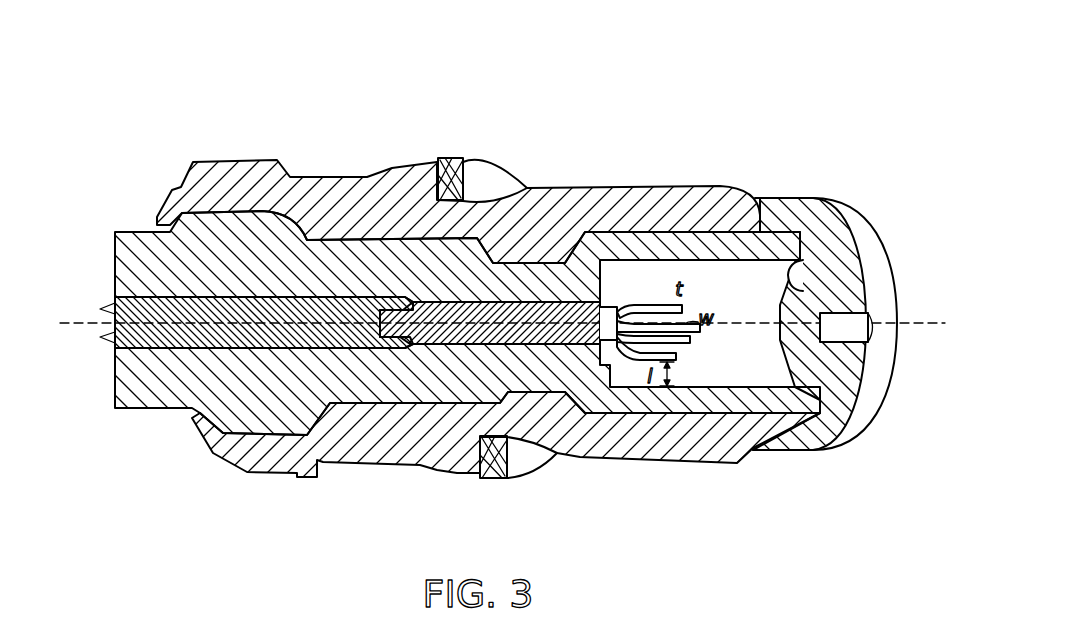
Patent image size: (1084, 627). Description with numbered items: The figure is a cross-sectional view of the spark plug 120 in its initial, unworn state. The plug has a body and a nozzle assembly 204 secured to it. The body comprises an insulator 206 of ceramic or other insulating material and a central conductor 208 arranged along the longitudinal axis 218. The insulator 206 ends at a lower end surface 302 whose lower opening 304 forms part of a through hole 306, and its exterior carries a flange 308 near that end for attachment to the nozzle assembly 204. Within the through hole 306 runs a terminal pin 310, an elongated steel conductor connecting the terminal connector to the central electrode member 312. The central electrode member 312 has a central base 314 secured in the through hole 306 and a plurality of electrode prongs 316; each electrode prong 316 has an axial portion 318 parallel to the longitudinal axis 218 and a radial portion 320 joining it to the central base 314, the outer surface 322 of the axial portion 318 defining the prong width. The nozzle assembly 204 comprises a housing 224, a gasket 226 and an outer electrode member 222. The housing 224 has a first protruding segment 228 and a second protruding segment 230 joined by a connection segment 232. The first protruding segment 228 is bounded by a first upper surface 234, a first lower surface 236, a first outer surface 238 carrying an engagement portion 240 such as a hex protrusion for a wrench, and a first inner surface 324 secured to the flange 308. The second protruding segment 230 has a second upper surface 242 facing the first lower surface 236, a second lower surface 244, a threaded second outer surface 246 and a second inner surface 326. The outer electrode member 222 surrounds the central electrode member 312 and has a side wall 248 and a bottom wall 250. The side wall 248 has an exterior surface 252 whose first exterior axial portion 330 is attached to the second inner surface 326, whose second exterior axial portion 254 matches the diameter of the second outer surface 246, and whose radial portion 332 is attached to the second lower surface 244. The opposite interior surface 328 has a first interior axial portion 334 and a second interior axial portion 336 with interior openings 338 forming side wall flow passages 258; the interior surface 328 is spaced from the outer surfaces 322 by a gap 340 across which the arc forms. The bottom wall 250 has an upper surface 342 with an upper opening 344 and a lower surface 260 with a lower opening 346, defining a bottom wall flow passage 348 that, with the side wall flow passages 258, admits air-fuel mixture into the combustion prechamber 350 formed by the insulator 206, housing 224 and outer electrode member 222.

The spark plug 120 is at (172, 34).
The nozzle assembly 204 is at (589, 100).
The insulator 206 is at (130, 230).
The central conductor 208 is at (128, 284).
The longitudinal axis 218 is at (72, 323).
The outer electrode member 222 is at (875, 268).
The housing 224 is at (333, 208).
The gasket 226 is at (456, 163).
The first protruding segment 228 is at (343, 175).
The second protruding segment 230 is at (704, 184).
The connection segment 232 is at (497, 185).
The first upper surface 234 is at (163, 197).
The first lower surface 236 is at (483, 481).
The first outer surface 238 is at (399, 163).
The engagement portion 240 is at (236, 170).
The second upper surface 242 is at (541, 442).
The second lower surface 244 is at (761, 190).
The second outer surface 246 is at (648, 422).
The side wall 248 is at (714, 184).
The bottom wall 250 is at (832, 267).
The exterior surface 252 is at (706, 416).
The second exterior axial portion 254 is at (802, 452).
The side wall flow passages 258 is at (812, 424).
The lower surface 260 is at (885, 373).
The lower end surface 302 is at (562, 300).
The lower opening 304 is at (588, 290).
The through hole 306 is at (160, 350).
The flange 308 is at (237, 432).
The terminal pin 310 is at (120, 338).
The central electrode member 312 is at (622, 303).
The central base 314 is at (600, 358).
The electrode prongs 316 is at (668, 245).
The axial portion 318 is at (685, 339).
The radial portion 320 is at (609, 392).
The outer surface 322 is at (676, 362).
The first inner surface 324 is at (287, 437).
The second inner surface 326 is at (720, 416).
The interior surface 328 is at (753, 416).
The first exterior axial portion 330 is at (678, 420).
The radial portion 332 is at (768, 194).
The first interior axial portion 334 is at (633, 240).
The second interior axial portion 336 is at (806, 255).
The interior openings 338 is at (798, 388).
The gap 340 is at (634, 379).
The upper surface 342 is at (872, 288).
The upper opening 344 is at (818, 318).
The lower opening 346 is at (876, 330).
The bottom wall flow passage 348 is at (868, 402).
The combustion prechamber 350 is at (775, 330).